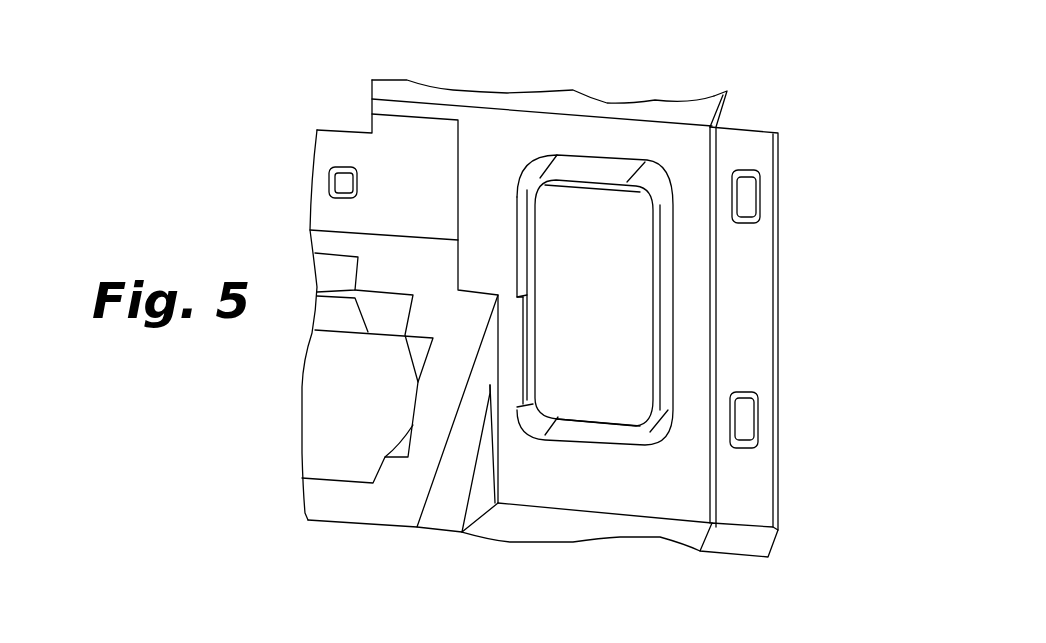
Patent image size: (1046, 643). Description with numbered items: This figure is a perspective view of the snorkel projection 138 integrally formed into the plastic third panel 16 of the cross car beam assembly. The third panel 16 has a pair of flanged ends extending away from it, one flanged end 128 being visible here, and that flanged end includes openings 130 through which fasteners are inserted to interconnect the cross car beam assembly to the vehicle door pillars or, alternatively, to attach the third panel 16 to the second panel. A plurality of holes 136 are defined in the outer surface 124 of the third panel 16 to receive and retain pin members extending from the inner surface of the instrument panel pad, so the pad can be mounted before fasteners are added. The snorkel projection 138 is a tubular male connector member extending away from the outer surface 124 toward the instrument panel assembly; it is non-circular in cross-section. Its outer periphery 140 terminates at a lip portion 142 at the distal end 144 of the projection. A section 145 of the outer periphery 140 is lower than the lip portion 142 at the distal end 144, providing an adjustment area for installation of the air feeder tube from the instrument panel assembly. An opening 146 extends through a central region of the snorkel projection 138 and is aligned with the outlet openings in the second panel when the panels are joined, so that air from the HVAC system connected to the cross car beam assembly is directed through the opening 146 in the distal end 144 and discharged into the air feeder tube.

The third panel 16 is at (840, 188).
The outer surface 124 is at (333, 497).
The flanged end 128 is at (740, 142).
The openings 130 is at (750, 202).
The holes 136 is at (341, 167).
The snorkel projection 138 is at (592, 446).
The outer periphery 140 is at (667, 325).
The lip portion 142 is at (595, 178).
The distal end 144 is at (522, 183).
The section of the outer periphery 145 is at (517, 407).
The opening 146 is at (600, 287).